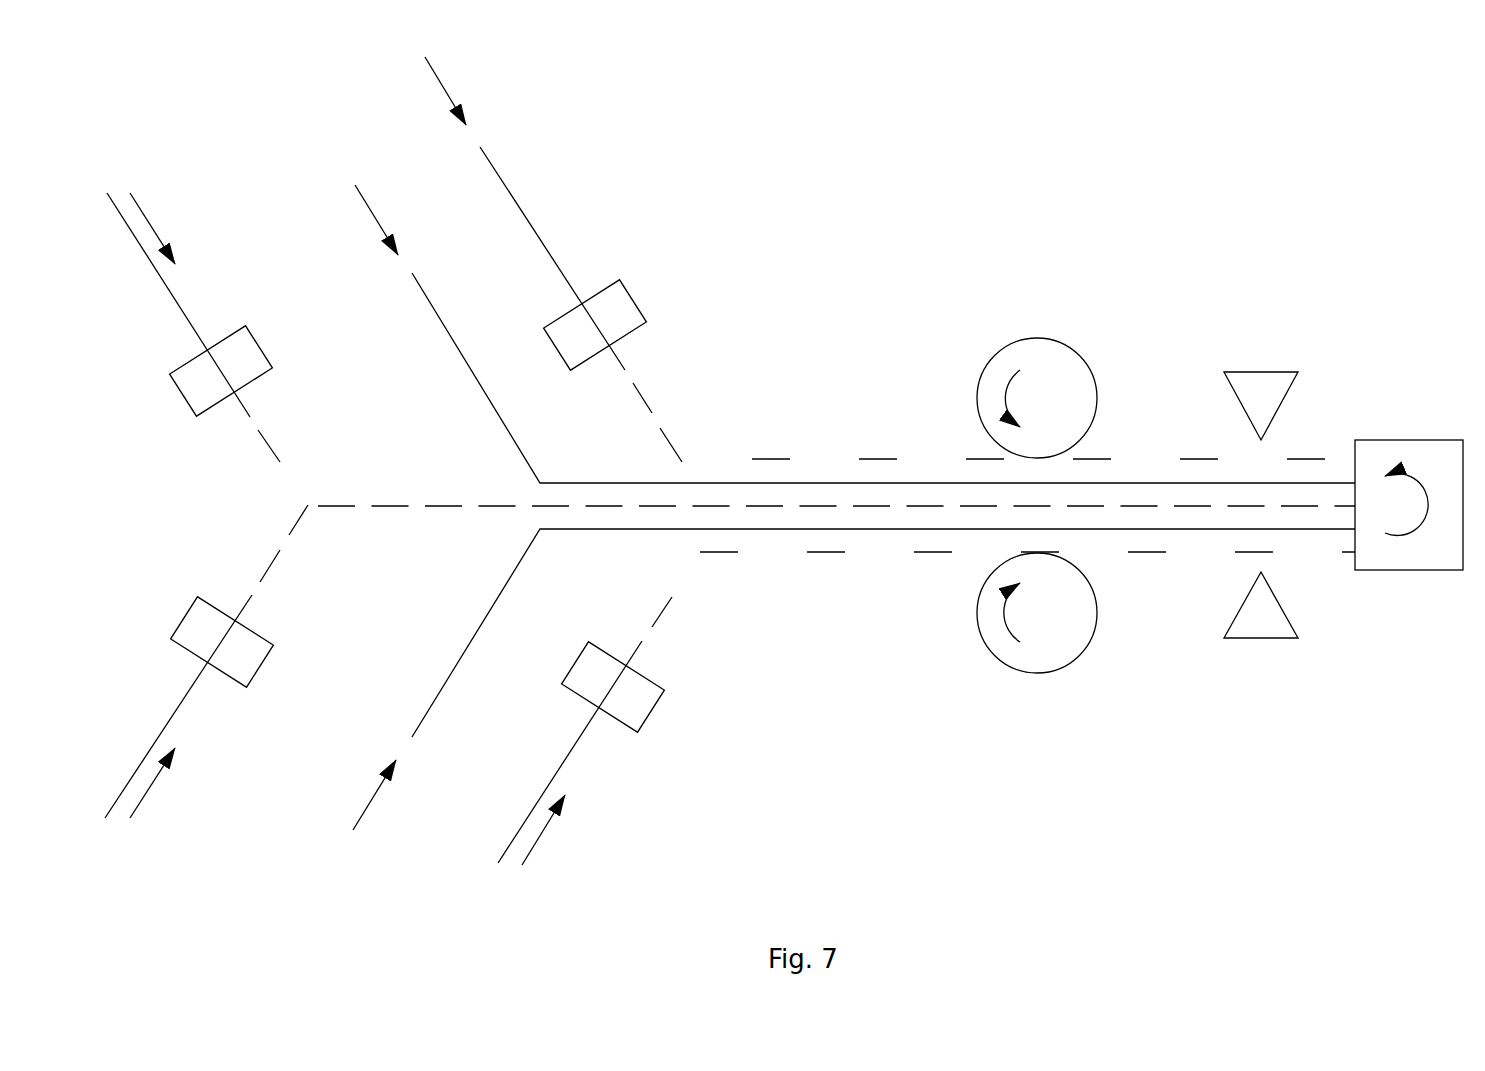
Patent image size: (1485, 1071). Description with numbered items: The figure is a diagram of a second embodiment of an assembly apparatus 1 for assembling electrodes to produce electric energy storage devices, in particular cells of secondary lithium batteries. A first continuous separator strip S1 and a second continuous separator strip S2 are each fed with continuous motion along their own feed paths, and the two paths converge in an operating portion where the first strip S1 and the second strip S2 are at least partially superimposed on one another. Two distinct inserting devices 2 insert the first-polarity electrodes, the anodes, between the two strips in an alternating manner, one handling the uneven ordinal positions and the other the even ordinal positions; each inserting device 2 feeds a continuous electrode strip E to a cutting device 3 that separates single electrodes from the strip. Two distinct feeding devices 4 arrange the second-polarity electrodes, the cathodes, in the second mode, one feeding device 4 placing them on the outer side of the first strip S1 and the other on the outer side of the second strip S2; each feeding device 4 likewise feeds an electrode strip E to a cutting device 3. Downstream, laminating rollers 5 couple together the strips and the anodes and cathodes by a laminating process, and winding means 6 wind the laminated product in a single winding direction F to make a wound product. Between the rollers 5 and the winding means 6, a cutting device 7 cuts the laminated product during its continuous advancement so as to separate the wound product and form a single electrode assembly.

The assembly apparatus 1 is at (238, 143).
The inserting device 2 is at (212, 455).
The cutting device 3 is at (248, 352).
The feeding device 4 is at (656, 143).
The laminating rollers 5 is at (1050, 355).
The winding means 6 is at (1418, 453).
The cutting device 7 is at (1262, 388).
The continuous electrode strip E is at (190, 318).
The first continuous separator strip S1 is at (465, 650).
The second continuous separator strip S2 is at (460, 352).
The winding direction F is at (1425, 543).